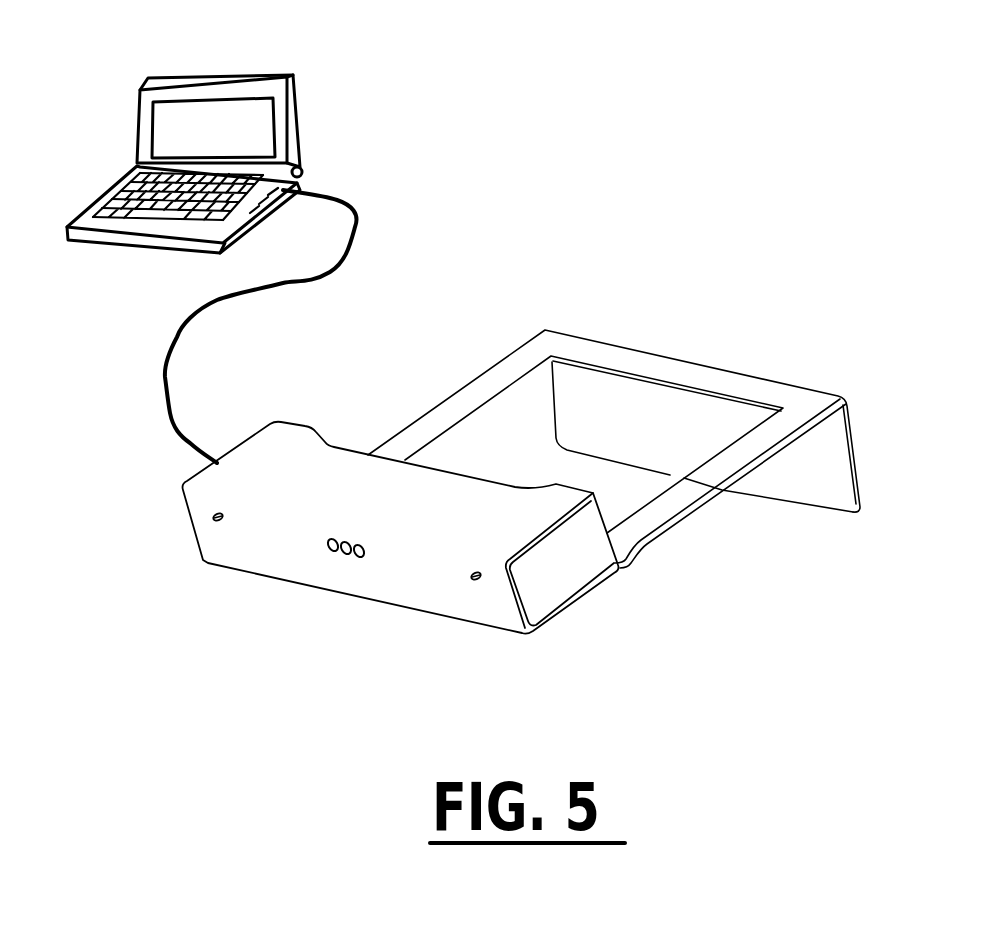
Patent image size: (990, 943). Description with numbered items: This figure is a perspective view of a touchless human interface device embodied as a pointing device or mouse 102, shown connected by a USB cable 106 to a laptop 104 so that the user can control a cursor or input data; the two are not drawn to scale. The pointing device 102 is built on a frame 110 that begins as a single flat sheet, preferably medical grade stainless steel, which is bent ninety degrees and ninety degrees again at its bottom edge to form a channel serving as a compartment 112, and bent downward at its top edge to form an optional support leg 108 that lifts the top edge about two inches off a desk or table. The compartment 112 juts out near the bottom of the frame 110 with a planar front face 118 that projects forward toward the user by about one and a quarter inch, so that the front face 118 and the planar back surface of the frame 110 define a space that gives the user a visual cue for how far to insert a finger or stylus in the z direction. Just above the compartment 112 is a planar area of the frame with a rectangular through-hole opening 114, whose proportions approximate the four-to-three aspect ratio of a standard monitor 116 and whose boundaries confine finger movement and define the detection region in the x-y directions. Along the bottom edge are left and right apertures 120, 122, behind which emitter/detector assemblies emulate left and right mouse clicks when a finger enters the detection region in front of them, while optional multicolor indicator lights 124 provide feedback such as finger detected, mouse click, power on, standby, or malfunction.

The touchless pointing device 102 is at (612, 310).
The laptop 104 is at (259, 78).
The USB cable 106 is at (353, 221).
The support leg 108 is at (853, 452).
The frame 110 is at (672, 507).
The compartment 112 is at (285, 443).
The opening 114 is at (665, 413).
The monitor 116 is at (187, 130).
The front face 118 is at (498, 520).
The left aperture 120 is at (210, 520).
The right aperture 122 is at (473, 580).
The indicator lights 124 is at (335, 560).